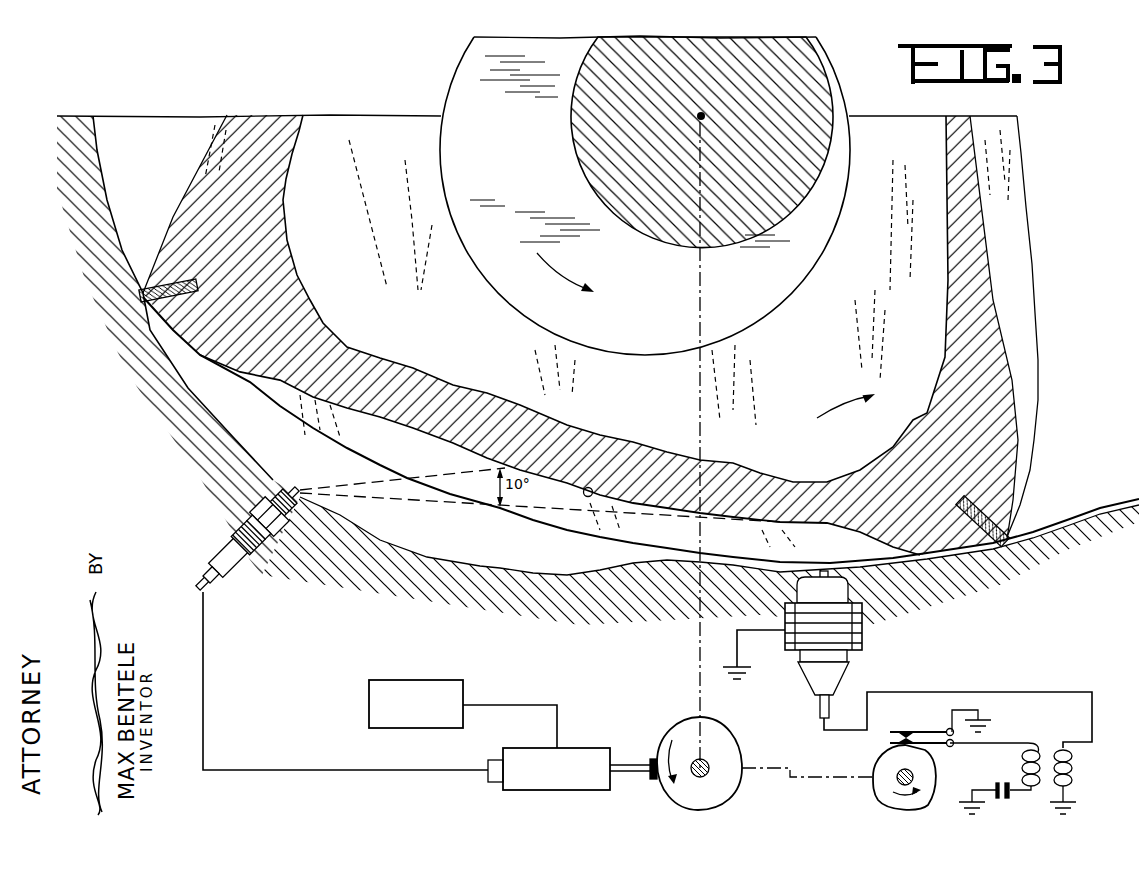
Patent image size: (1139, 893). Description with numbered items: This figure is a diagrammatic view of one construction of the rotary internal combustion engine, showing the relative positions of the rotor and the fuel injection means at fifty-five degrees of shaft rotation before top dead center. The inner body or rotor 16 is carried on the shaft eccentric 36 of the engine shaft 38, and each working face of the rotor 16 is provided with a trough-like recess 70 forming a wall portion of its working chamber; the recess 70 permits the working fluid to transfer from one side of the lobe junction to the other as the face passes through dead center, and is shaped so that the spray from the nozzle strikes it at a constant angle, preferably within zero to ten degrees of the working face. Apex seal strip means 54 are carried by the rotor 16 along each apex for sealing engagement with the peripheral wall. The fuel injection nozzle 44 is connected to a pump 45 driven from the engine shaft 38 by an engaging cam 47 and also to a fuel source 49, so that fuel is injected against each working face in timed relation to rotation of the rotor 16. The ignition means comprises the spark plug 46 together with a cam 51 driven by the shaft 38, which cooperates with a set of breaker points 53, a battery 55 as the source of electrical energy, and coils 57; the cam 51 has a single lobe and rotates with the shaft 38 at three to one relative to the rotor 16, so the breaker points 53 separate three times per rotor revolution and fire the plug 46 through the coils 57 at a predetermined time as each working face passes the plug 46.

The inner body or rotor 16 is at (821, 384).
The shaft eccentric 36 is at (668, 298).
The engine shaft 38 is at (743, 198).
The fuel injection nozzle 44 is at (248, 548).
The pump 45 is at (560, 790).
The spark plug 46 is at (865, 640).
The engaging cam 47 is at (685, 720).
The fuel source 49 is at (425, 658).
The cam 51 is at (884, 794).
The breaker points 53 is at (925, 732).
The apex seal strip means 54 is at (140, 293).
The battery 55 is at (1007, 782).
The coils 57 is at (1053, 744).
The trough-like recess 70 is at (262, 131).